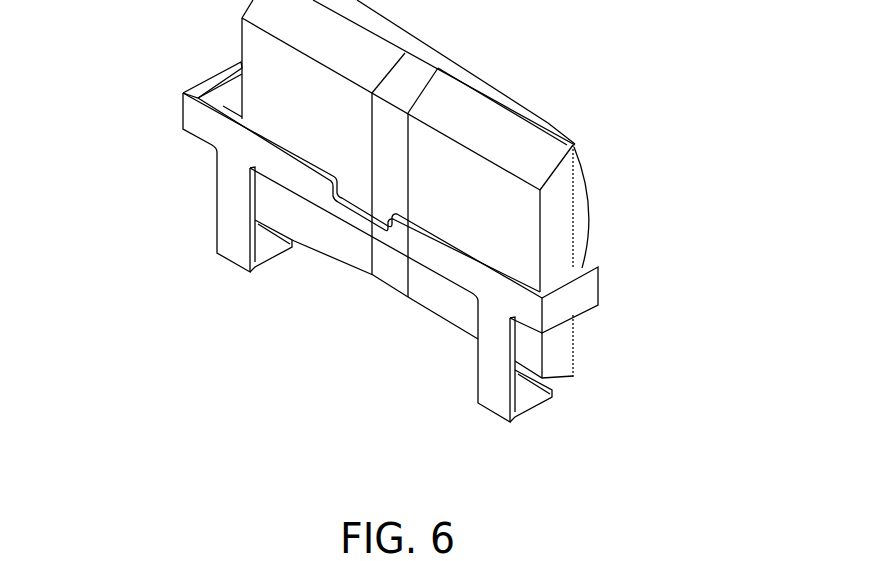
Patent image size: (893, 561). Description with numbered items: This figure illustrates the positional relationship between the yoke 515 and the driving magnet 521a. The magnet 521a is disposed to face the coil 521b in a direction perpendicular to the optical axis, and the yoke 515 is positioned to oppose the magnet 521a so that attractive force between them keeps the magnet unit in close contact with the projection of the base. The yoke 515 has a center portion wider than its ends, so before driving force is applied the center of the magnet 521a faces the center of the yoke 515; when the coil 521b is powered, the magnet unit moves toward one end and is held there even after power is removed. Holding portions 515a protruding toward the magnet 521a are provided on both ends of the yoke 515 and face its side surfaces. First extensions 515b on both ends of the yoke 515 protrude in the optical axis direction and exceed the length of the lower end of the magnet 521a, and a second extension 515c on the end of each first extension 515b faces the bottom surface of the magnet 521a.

The yoke 515 is at (366, 249).
The holding portion 515a is at (208, 90).
The first extension 515b is at (233, 200).
The second extension 515c is at (268, 238).
The magnet 521a is at (557, 198).
The coil 521b is at (578, 240).